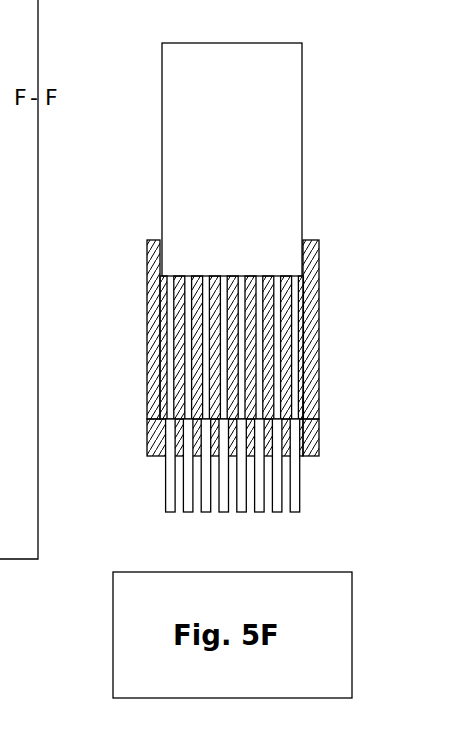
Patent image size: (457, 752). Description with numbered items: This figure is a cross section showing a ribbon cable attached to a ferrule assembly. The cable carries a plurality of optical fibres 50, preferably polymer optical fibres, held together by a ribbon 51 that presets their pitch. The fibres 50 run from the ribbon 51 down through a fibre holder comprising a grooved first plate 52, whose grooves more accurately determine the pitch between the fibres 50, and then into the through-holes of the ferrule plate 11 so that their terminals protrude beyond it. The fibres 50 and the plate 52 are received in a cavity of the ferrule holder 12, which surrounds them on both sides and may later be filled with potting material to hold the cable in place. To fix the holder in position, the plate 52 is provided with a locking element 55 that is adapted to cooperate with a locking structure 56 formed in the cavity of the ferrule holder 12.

The ribbon 51 is at (283, 84).
The grooved first plate 52 is at (228, 276).
The ferrule holder 12 is at (150, 318).
The ferrule plate 11 is at (150, 439).
The locking element 55 is at (308, 417).
The locking structure 56 is at (312, 400).
The optical fibres 50 is at (292, 512).